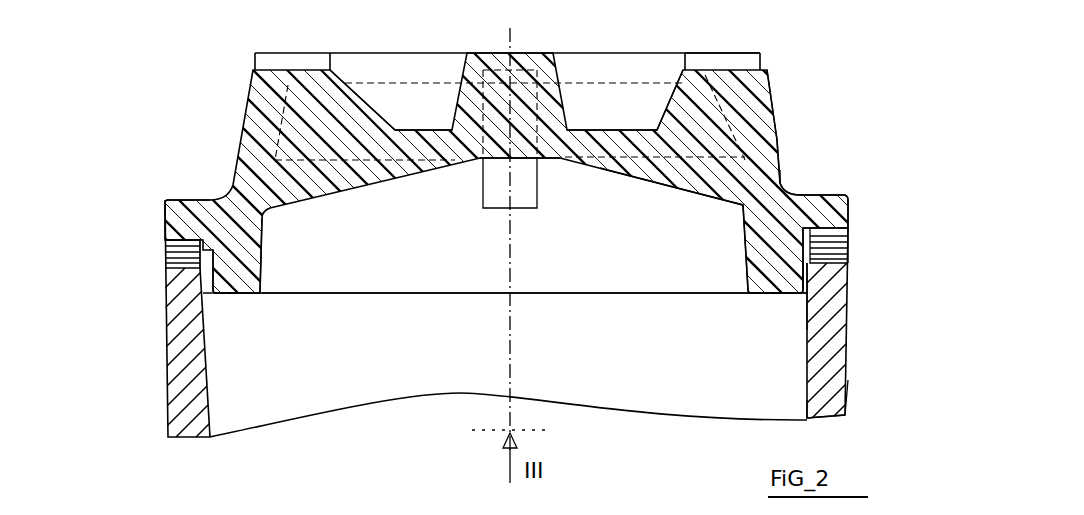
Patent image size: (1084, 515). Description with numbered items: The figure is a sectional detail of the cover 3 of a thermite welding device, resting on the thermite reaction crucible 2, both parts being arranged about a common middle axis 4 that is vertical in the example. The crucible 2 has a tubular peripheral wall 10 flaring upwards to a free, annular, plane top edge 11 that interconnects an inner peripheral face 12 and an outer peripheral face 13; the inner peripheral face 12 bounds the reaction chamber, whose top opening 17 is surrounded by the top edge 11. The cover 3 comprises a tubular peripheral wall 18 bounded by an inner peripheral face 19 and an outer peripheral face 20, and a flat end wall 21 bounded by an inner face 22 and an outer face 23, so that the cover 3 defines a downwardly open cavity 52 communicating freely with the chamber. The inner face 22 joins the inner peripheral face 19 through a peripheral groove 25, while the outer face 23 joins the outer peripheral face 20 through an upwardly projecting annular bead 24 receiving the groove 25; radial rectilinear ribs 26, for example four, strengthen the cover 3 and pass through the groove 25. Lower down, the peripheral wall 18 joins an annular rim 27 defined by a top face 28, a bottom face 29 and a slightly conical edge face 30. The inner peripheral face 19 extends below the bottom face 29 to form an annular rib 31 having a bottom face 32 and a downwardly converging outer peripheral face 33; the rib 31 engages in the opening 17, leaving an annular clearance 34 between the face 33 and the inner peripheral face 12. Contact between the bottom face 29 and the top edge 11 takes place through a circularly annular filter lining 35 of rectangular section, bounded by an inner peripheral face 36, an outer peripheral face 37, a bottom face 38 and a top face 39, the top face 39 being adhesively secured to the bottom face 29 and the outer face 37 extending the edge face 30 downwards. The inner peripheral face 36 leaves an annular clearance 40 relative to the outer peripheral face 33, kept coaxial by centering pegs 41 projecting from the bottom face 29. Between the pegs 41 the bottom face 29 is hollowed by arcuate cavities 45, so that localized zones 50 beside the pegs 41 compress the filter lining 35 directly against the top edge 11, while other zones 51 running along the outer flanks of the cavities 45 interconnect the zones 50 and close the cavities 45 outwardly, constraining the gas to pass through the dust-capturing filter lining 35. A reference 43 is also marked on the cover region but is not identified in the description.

The thermite reaction crucible 2 is at (156, 343).
The cover 3 is at (218, 131).
The common middle axis 4 is at (510, 338).
The tubular peripheral wall 10 is at (846, 372).
The top edge 11 is at (850, 268).
The inner peripheral face 12 is at (806, 410).
The outer peripheral face 13 is at (847, 400).
The top opening 17 is at (426, 272).
The tubular peripheral wall 18 is at (779, 140).
The inner peripheral face 19 is at (690, 196).
The outer peripheral face 20 is at (781, 162).
The flat end wall 21 is at (408, 130).
The inner face 22 is at (558, 160).
The outer face 23 is at (588, 130).
The annular bead 24 is at (768, 60).
The peripheral groove 25 is at (779, 90).
The rectilinear ribs 26 is at (380, 180).
The annular rim 27 is at (852, 198).
The top face 28 is at (802, 188).
The bottom face 29 is at (856, 244).
The edge face 30 is at (858, 222).
The annular rib 31 is at (778, 295).
The bottom face 32 is at (760, 295).
The outer peripheral face 33 is at (838, 302).
The annular clearance 34 is at (806, 295).
The filter lining 35 is at (856, 258).
The inner peripheral face 36 is at (244, 268).
The outer peripheral face 37 is at (162, 262).
The bottom face 38 is at (165, 294).
The top face 39 is at (165, 212).
The annular clearance 40 is at (762, 272).
The centering pegs 41 is at (245, 248).
The cover 43 is at (186, 87).
The arcuate cavities 45 is at (198, 193).
The localized zone 50 is at (273, 222).
The other zones 51 is at (163, 242).
The downwardly open cavity 52 is at (489, 257).